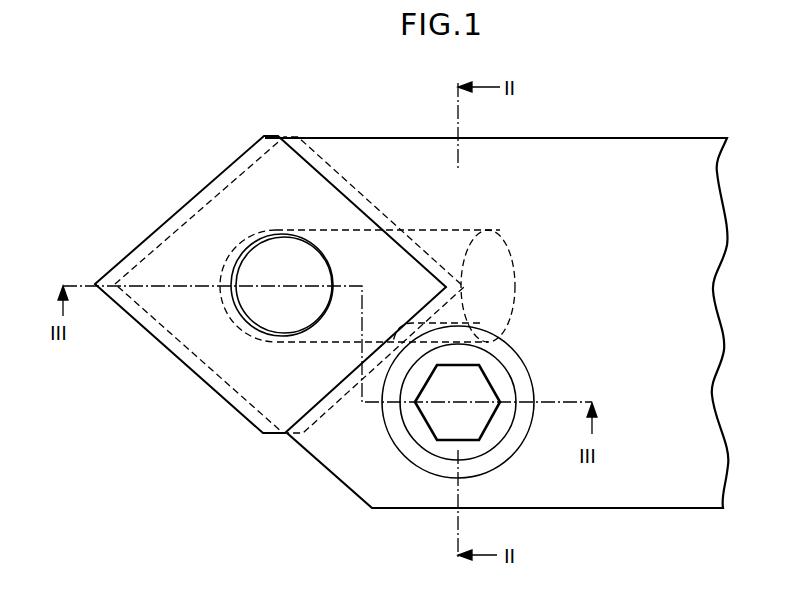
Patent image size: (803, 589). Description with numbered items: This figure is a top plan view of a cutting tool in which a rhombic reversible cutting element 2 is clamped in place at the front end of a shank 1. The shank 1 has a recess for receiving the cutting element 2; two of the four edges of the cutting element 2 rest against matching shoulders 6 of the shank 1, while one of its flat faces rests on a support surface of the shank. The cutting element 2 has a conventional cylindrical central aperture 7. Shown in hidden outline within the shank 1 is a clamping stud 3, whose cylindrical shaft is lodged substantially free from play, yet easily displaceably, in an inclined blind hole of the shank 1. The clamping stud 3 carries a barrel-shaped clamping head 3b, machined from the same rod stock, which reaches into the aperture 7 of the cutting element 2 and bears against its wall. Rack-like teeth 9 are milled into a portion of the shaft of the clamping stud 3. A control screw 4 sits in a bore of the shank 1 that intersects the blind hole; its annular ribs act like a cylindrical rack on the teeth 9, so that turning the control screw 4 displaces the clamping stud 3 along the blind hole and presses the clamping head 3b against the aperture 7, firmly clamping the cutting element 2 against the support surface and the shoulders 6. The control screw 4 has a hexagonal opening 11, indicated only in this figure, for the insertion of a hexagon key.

The shank 1 is at (634, 302).
The reversible cutting element 2 is at (198, 200).
The clamping stud 3 is at (367, 269).
The clamping head 3b is at (275, 250).
The control screw 4 is at (442, 452).
The shoulders 6 is at (312, 158).
The central aperture 7 is at (237, 303).
The rack-like teeth 9 is at (428, 325).
The hexagon socket 11 is at (488, 385).